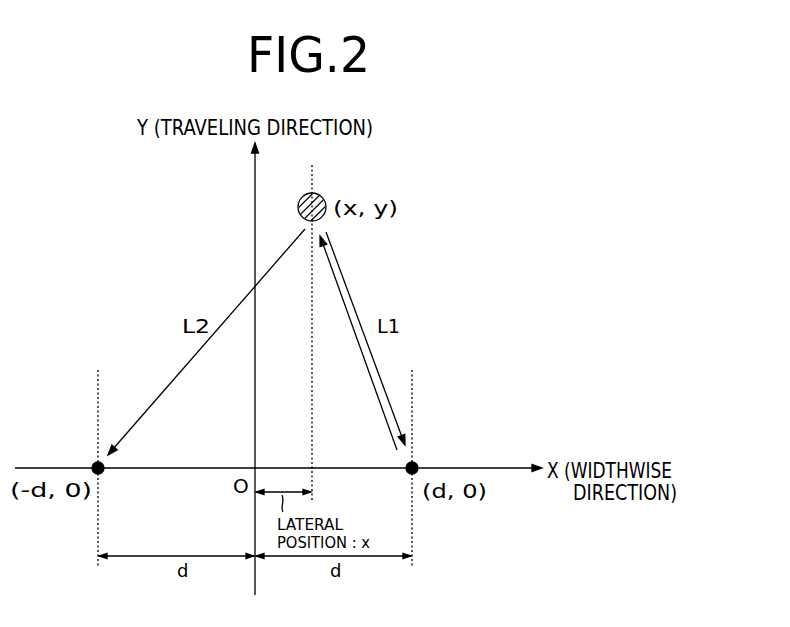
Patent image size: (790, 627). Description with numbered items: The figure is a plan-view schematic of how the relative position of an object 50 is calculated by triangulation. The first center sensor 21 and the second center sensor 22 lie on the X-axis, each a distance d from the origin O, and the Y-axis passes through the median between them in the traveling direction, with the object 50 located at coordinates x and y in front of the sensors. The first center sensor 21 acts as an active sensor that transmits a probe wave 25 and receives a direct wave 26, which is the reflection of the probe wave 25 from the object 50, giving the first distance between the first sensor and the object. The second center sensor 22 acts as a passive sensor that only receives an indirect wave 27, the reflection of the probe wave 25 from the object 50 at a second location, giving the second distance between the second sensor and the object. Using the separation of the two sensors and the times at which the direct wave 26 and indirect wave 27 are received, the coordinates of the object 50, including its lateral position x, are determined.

The first center sensor 21 is at (418, 463).
The second center sensor 22 is at (94, 463).
The probe wave 25 is at (377, 398).
The direct wave 26 is at (348, 287).
The indirect wave 27 is at (158, 403).
The object 50 is at (299, 196).